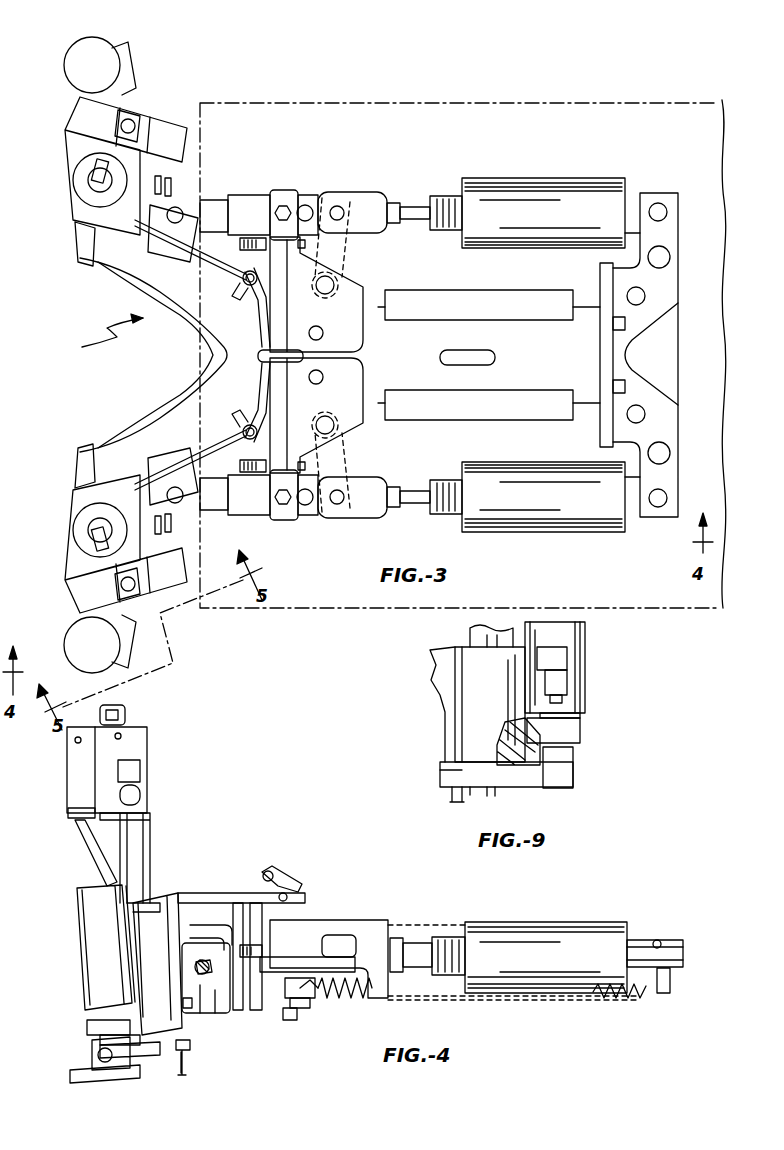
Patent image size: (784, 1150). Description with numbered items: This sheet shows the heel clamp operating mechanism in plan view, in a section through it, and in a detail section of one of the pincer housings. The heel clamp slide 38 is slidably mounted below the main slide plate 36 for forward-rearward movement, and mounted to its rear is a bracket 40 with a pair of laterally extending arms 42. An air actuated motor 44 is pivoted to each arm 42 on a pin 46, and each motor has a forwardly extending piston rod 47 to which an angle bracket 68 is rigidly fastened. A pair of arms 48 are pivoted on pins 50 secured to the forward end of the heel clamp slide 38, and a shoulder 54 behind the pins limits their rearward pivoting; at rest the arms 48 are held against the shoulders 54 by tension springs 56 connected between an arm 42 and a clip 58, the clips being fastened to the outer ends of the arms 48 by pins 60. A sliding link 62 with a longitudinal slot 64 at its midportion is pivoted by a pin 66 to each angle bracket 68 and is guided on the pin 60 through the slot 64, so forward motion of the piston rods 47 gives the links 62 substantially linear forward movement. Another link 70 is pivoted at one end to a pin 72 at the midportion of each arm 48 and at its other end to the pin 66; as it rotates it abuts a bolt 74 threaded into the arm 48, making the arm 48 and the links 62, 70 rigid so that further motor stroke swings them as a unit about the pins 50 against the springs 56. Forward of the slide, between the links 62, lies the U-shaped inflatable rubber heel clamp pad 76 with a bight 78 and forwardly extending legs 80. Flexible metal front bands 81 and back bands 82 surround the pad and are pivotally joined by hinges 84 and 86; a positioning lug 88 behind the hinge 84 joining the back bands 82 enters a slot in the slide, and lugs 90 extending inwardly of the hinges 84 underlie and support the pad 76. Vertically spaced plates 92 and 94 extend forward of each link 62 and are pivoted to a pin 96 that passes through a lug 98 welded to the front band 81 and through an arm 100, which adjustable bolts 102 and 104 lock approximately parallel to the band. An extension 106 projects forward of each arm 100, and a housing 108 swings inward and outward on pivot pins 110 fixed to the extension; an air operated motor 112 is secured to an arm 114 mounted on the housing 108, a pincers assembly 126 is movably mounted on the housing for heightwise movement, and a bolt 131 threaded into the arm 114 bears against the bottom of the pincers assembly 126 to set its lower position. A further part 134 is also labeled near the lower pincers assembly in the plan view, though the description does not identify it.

In FIG. 3, the main slide plate 36 is at (436, 108).
In FIG. 3, the heel clamp slide 38 is at (545, 381).
In FIG. 4, the heel clamp slide 38 is at (442, 932).
In FIG. 3, the bracket 40 is at (618, 376).
In FIG. 3, the arm 42 is at (652, 196).
In FIG. 4, the arm 42 is at (680, 942).
In FIG. 3, the air actuated motor 44 is at (573, 190).
In FIG. 4, the air actuated motor 44 is at (578, 936).
In FIG. 3, the pin 46 is at (667, 211).
In FIG. 4, the pin 46 is at (657, 940).
In FIG. 3, the piston rod 47 is at (416, 205).
In FIG. 4, the piston rod 47 is at (416, 950).
In FIG. 3, the arm 48 is at (296, 308).
In FIG. 3, the pin 50 is at (323, 382).
In FIG. 3, the shoulder 54 is at (366, 352).
In FIG. 4, the tension spring 56 is at (349, 1000).
In FIG. 4, the clip 58 is at (303, 1010).
In FIG. 3, the pin 60 is at (283, 205).
In FIG. 4, the pin 60 is at (285, 1018).
In FIG. 3, the sliding link 62 is at (246, 200).
In FIG. 4, the sliding link 62 is at (327, 970).
In FIG. 3, the longitudinal slot 64 is at (305, 205).
In FIG. 3, the pin 66 is at (337, 206).
In FIG. 4, the pin 66 is at (340, 1000).
In FIG. 3, the angle bracket 68 is at (370, 195).
In FIG. 4, the angle bracket 68 is at (374, 930).
In FIG. 3, the link 70 is at (336, 248).
In FIG. 4, the link 70 is at (333, 950).
In FIG. 3, the pin 72 is at (334, 290).
In FIG. 3, the bolt 74 is at (256, 474).
In FIG. 4, the bolt 74 is at (256, 957).
In FIG. 3, the heel clamp pad 76 is at (101, 336).
In FIG. 4, the heel clamp pad 76 is at (213, 890).
In FIG. 3, the bight 78 is at (213, 355).
In FIG. 3, the leg 80 is at (100, 277).
In FIG. 3, the front band 81 is at (213, 260).
In FIG. 4, the front band 81 is at (200, 914).
In FIG. 3, the back band 82 is at (250, 305).
In FIG. 3, the hinge 84 is at (256, 270).
In FIG. 4, the hinge 84 is at (250, 922).
In FIG. 4, the hinge 86 is at (262, 890).
In FIG. 4, the positioning lug 88 is at (292, 902).
In FIG. 3, the lug 90 is at (232, 292).
In FIG. 3, the plate 92 is at (216, 520).
In FIG. 4, the plate 92 is at (188, 920).
In FIG. 4, the plate 94 is at (212, 948).
In FIG. 3, the pin 96 is at (172, 516).
In FIG. 4, the pin 96 is at (182, 1002).
In FIG. 3, the lug 98 is at (170, 246).
In FIG. 3, the arm 100 is at (146, 478).
In FIG. 9, the arm 100 is at (442, 678).
In FIG. 4, the arm 100 is at (208, 1010).
In FIG. 3, the adjustable bolt 102 is at (138, 240).
In FIG. 3, the adjustable bolt 104 is at (204, 272).
In FIG. 4, the adjustable bolt 104 is at (196, 968).
In FIG. 9, the extension 106 is at (468, 792).
In FIG. 4, the extension 106 is at (110, 1075).
In FIG. 9, the housing 108 is at (486, 697).
In FIG. 4, the housing 108 is at (170, 1002).
In FIG. 9, the pivot pin 110 is at (452, 752).
In FIG. 3, the air operated motor 112 is at (76, 646).
In FIG. 9, the air operated motor 112 is at (568, 681).
In FIG. 9, the arm 114 is at (573, 734).
In FIG. 4, the arm 114 is at (88, 1027).
In FIG. 3, the pincers assembly 126 is at (76, 530).
In FIG. 4, the pincers assembly 126 is at (150, 838).
In FIG. 4, the bolt 131 is at (174, 1078).
In FIG. 3, the cap 134 is at (82, 470).